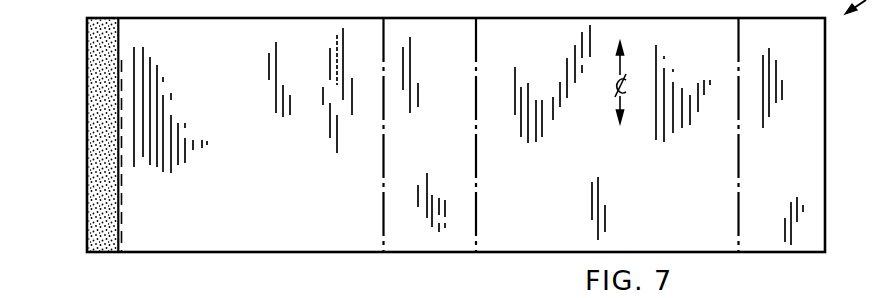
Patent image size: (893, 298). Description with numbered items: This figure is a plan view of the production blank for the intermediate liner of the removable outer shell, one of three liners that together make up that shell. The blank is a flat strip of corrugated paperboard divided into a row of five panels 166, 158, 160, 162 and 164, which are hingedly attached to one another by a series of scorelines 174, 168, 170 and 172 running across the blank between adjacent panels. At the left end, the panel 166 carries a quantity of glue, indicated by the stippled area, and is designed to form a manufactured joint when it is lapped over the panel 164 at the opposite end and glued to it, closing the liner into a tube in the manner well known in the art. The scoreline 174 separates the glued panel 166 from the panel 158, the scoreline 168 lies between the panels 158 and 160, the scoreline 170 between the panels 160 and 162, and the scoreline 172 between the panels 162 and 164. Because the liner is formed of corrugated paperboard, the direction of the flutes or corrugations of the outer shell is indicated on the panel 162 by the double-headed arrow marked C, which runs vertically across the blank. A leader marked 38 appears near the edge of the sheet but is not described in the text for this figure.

The web 38 is at (850, 297).
The panel 158 is at (263, 153).
The panel 160 is at (445, 155).
The panel 162 is at (620, 155).
The panel 164 is at (798, 155).
The panel 166 is at (100, 195).
The scoreline 168 is at (383, 210).
The scoreline 170 is at (477, 213).
The scoreline 172 is at (738, 213).
The scoreline 174 is at (118, 218).